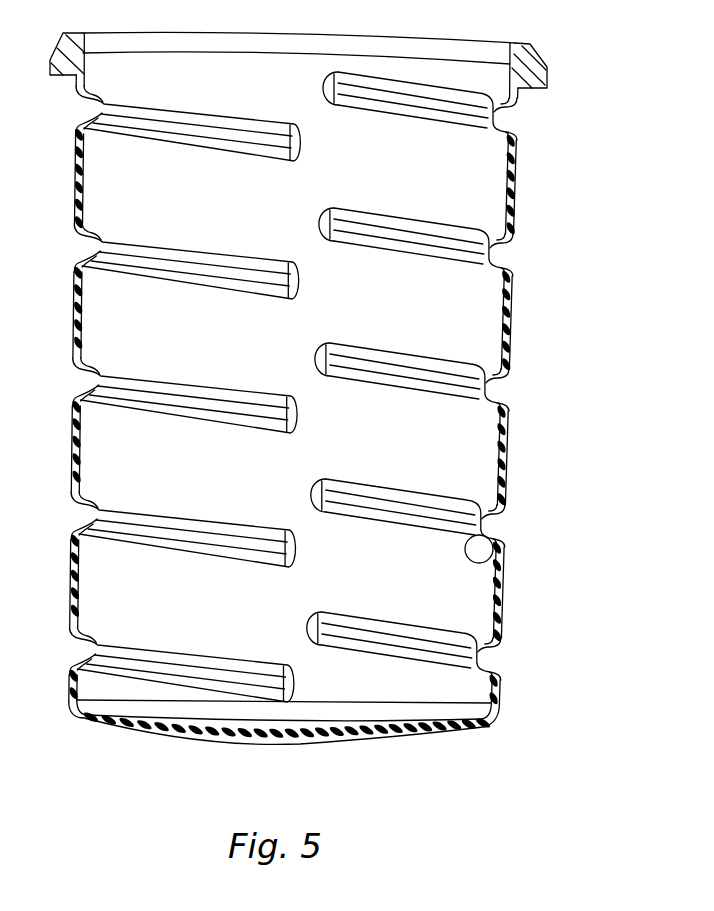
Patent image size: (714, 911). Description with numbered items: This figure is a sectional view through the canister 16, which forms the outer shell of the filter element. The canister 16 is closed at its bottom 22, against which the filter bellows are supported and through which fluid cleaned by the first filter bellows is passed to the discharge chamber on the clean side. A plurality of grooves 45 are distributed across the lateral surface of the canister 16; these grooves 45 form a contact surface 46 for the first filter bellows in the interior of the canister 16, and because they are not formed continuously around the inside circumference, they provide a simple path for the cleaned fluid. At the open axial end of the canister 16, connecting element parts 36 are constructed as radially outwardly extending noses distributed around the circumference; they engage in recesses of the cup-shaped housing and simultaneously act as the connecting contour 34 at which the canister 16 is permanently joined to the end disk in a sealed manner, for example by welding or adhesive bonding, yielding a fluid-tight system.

The canister 16 is at (564, 228).
The bottom 22 is at (187, 740).
The connecting contour 34 is at (520, 43).
The connecting element parts 36 is at (536, 78).
The grooves 45 is at (503, 383).
The contact surface 46 is at (485, 560).